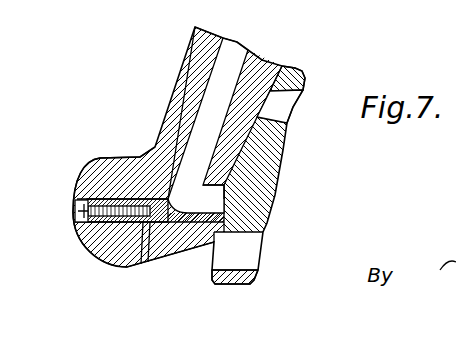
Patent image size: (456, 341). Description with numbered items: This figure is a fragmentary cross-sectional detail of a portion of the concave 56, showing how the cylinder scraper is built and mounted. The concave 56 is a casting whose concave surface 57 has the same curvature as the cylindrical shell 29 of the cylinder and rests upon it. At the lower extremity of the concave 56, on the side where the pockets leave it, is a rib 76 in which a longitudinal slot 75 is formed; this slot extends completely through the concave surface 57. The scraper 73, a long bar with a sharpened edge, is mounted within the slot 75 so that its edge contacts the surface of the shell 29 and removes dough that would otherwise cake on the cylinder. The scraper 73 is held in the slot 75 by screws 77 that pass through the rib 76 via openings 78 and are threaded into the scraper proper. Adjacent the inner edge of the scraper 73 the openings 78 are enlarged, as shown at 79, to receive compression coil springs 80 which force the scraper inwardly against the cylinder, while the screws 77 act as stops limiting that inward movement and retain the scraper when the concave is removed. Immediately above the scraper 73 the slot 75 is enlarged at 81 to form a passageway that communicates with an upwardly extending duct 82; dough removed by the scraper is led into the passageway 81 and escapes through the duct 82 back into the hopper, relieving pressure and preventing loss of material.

The cylindrical shell 29 is at (303, 80).
The concave 56 is at (174, 90).
The concave surface 57 is at (240, 152).
The scraper 73 is at (149, 263).
The longitudinal slot 75 is at (141, 265).
The rib 76 is at (103, 263).
The screws 77 is at (75, 208).
The openings 78 is at (88, 245).
The enlarged portion of opening 79 is at (118, 198).
The compression coil springs 80 is at (93, 170).
The passageway 81 is at (200, 193).
The duct 82 is at (223, 68).